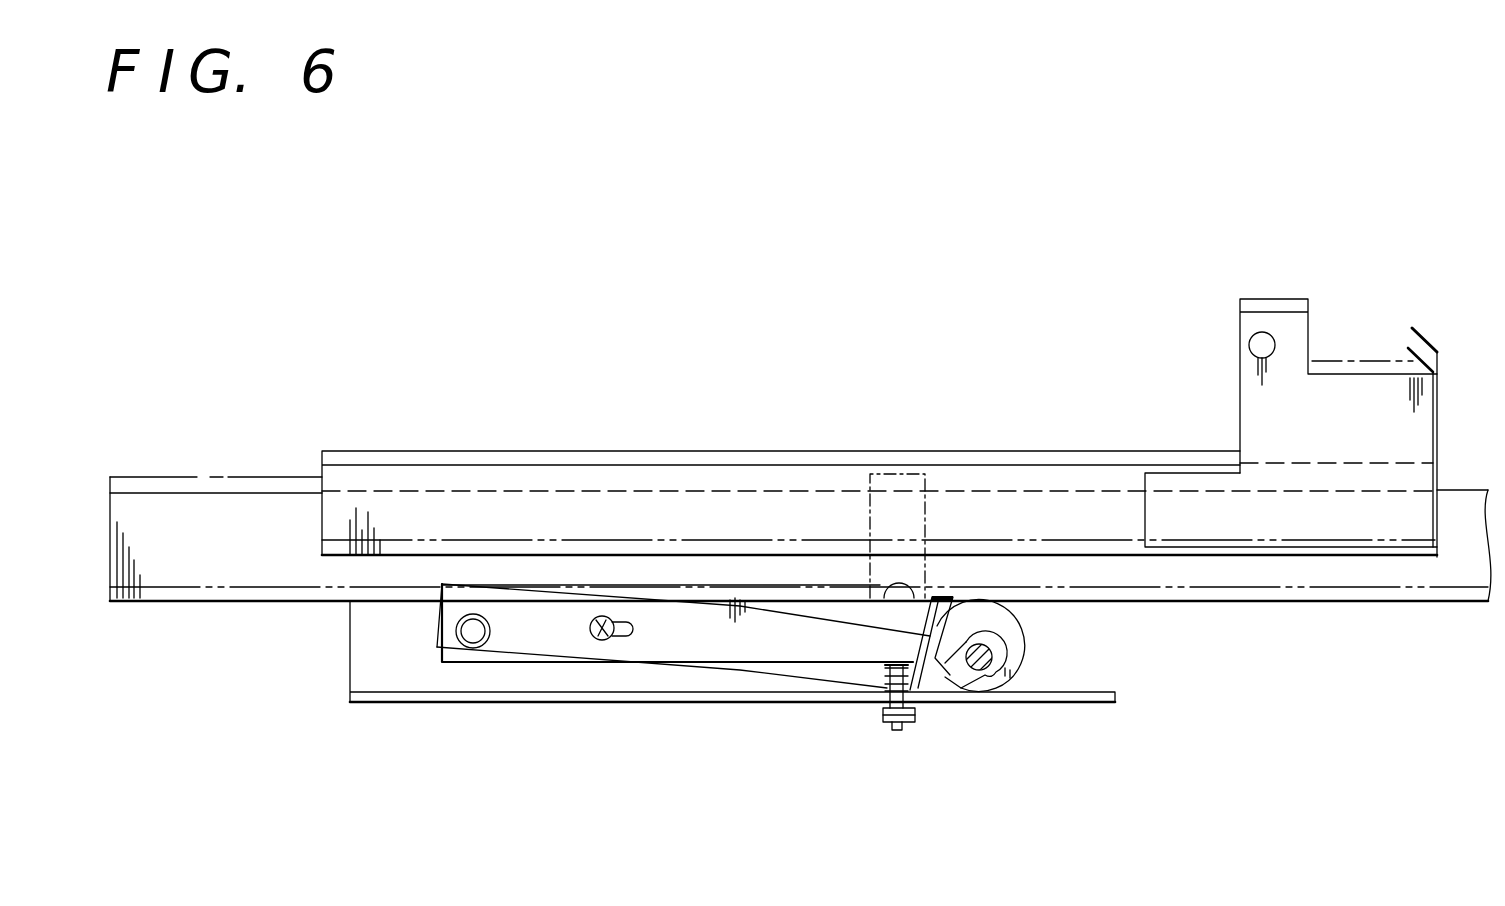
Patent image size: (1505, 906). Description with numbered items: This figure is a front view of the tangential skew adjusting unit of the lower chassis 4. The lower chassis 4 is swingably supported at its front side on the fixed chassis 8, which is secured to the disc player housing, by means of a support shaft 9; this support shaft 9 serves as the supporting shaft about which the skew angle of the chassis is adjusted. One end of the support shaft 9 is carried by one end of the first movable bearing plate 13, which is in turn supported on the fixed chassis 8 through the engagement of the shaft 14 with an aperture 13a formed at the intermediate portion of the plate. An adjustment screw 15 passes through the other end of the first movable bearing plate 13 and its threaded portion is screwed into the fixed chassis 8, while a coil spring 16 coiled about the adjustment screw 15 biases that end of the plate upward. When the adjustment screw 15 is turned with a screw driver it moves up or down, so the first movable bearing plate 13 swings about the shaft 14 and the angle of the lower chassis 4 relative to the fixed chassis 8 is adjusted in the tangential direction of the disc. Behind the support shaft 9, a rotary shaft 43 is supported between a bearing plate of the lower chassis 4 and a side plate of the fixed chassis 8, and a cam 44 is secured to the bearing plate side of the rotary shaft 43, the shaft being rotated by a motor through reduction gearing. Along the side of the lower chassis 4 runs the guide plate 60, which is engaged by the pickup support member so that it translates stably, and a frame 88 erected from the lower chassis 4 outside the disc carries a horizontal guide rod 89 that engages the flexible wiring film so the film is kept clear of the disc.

The lower chassis 4 is at (233, 497).
The guide plate 60 is at (588, 451).
The frame 88 is at (1257, 400).
The guide rod 89 is at (1250, 340).
The fixed chassis 8 is at (790, 703).
The support shaft 9 is at (473, 636).
The first movable bearing plate 13 is at (694, 648).
The aperture 13a is at (620, 640).
The shaft 14 is at (597, 640).
The adjustment screw 15 is at (898, 727).
The coil spring 16 is at (884, 700).
The rotary shaft 43 is at (983, 672).
The cam 44 is at (1027, 652).